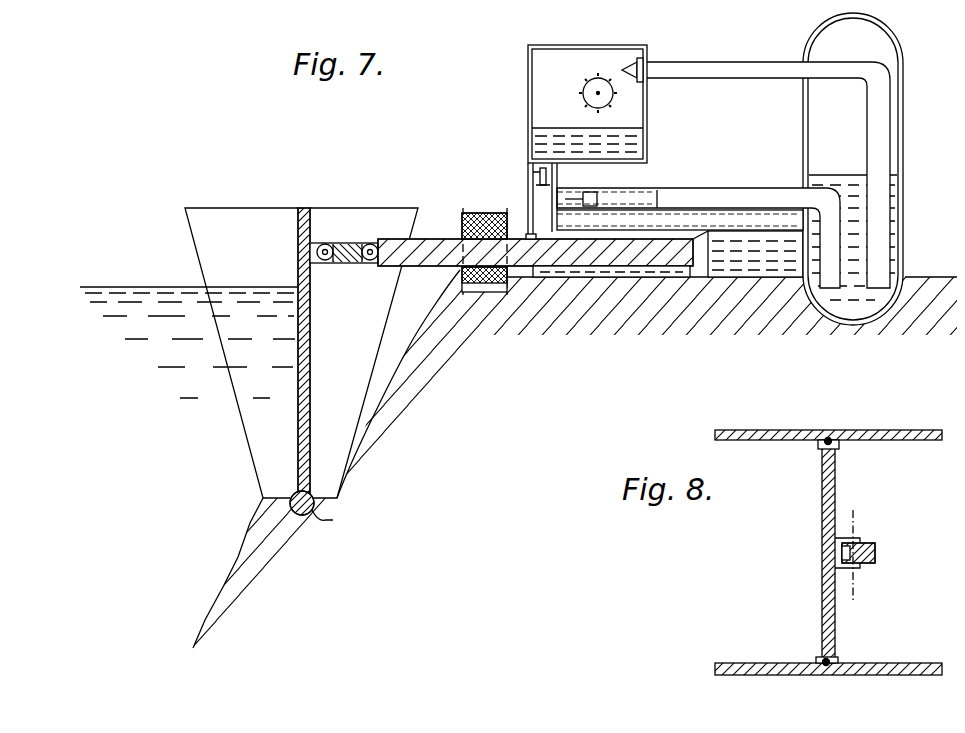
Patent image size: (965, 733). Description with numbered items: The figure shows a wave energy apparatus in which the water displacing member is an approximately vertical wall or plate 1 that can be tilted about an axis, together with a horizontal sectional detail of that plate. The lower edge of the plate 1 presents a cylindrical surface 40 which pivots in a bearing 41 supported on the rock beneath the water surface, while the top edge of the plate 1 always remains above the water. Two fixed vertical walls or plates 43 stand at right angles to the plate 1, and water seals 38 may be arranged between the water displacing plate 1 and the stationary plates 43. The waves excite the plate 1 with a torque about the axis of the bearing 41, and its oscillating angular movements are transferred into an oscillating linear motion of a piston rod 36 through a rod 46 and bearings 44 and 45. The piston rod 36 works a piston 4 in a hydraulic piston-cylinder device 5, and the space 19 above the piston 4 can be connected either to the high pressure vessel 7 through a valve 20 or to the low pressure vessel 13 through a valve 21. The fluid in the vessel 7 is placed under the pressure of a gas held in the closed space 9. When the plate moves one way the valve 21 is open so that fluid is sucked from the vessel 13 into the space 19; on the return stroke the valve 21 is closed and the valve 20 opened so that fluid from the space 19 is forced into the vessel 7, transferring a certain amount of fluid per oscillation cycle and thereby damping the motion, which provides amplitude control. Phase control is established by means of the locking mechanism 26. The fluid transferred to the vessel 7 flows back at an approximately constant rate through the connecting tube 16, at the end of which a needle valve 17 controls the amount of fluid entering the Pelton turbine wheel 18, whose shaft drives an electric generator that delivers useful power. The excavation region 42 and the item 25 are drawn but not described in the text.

In FIG. 7, the water displacing plate 1 is at (298, 352).
In FIG. 8, the water displacing plate 1 is at (836, 490).
In FIG. 7, the piston 4 is at (697, 280).
In FIG. 7, the hydraulic piston-cylinder device 5 is at (738, 280).
In FIG. 7, the high pressure vessel 7 is at (905, 113).
In FIG. 7, the closed gas space 9 is at (828, 37).
In FIG. 7, the low pressure vessel 13 is at (528, 82).
In FIG. 7, the connecting tube 16 is at (683, 61).
In FIG. 7, the needle valve 17 is at (627, 60).
In FIG. 7, the Pelton turbine wheel 18 is at (592, 75).
In FIG. 7, the space above the piston 19 is at (613, 278).
In FIG. 7, the valve 20 is at (590, 194).
In FIG. 7, the valve 21 is at (536, 171).
In FIG. 7, the liquid level 25 is at (548, 63).
In FIG. 7, the locking mechanism 26 is at (490, 293).
In FIG. 7, the piston rod 36 is at (425, 239).
In FIG. 8, the water seal 38 is at (828, 440).
In FIG. 7, the cylindrical surface 40 is at (314, 507).
In FIG. 7, the bearing 41 is at (326, 522).
In FIG. 7, the excavation 42 is at (347, 382).
In FIG. 7, the fixed vertical plates 43 is at (233, 208).
In FIG. 8, the fixed vertical plates 43 is at (913, 430).
In FIG. 7, the bearing 44 is at (325, 243).
In FIG. 8, the bearing 44 is at (852, 573).
In FIG. 7, the bearing 45 is at (372, 243).
In FIG. 7, the rod 46 is at (347, 243).
In FIG. 8, the rod 46 is at (877, 550).